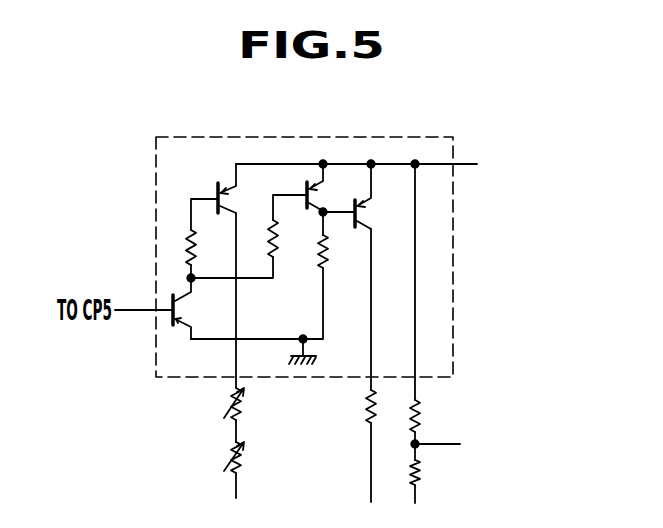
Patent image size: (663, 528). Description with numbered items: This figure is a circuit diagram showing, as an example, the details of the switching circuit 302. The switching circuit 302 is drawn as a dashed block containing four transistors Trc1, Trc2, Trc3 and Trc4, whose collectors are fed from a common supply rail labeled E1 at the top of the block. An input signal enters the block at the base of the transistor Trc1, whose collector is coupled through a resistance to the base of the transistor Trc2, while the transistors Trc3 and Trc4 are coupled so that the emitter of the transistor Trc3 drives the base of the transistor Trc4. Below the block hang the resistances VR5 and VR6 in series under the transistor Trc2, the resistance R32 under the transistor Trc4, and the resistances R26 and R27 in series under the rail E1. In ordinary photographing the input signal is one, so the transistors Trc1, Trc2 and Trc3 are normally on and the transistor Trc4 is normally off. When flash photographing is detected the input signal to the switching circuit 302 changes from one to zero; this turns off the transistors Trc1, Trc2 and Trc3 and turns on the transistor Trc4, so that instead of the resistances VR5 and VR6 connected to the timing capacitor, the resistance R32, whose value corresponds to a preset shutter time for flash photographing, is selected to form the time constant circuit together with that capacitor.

The switching circuit 302 is at (362, 137).
The supply voltage terminal E1 is at (366, 169).
The transistor Trc1 is at (181, 309).
The transistor Trc2 is at (226, 199).
The transistor Trc3 is at (314, 196).
The transistor Trc4 is at (364, 214).
The resistance VR5 is at (246, 327).
The resistance VR6 is at (246, 470).
The resistance R32 is at (356, 365).
The resistor R26 is at (426, 312).
The resistor R27 is at (426, 480).